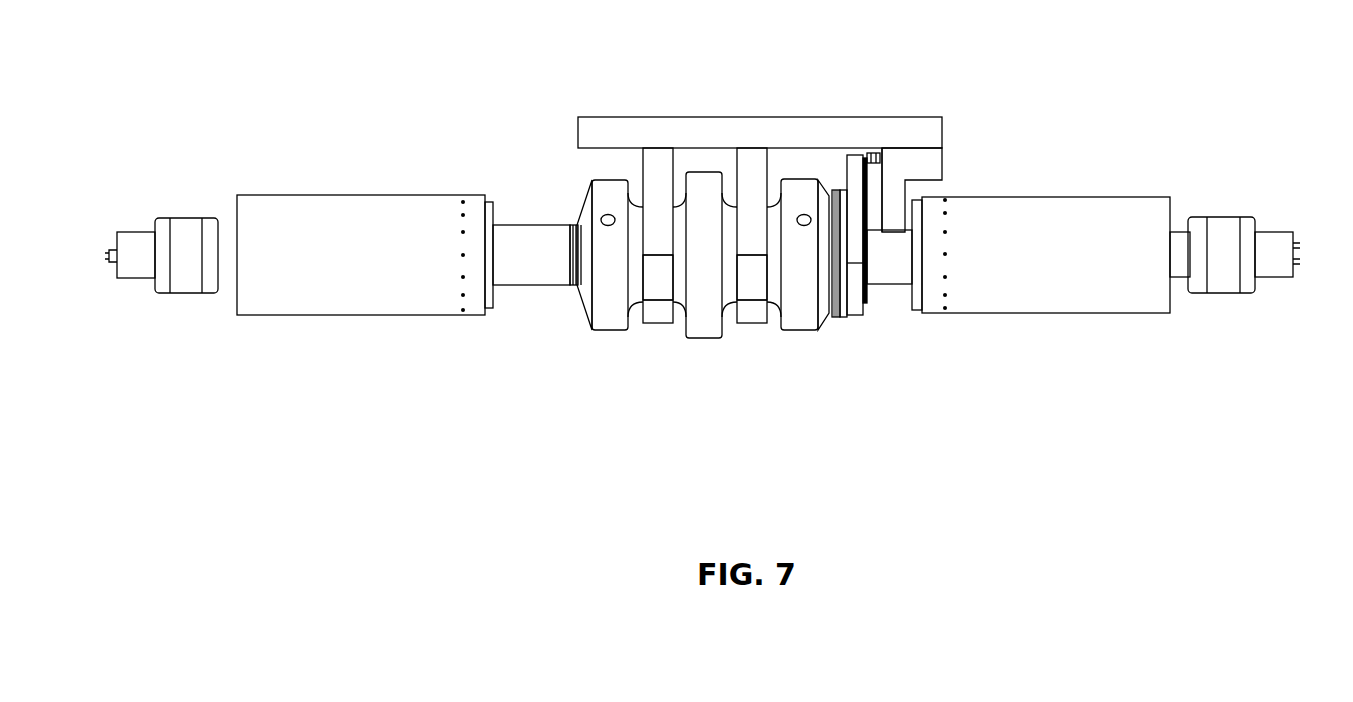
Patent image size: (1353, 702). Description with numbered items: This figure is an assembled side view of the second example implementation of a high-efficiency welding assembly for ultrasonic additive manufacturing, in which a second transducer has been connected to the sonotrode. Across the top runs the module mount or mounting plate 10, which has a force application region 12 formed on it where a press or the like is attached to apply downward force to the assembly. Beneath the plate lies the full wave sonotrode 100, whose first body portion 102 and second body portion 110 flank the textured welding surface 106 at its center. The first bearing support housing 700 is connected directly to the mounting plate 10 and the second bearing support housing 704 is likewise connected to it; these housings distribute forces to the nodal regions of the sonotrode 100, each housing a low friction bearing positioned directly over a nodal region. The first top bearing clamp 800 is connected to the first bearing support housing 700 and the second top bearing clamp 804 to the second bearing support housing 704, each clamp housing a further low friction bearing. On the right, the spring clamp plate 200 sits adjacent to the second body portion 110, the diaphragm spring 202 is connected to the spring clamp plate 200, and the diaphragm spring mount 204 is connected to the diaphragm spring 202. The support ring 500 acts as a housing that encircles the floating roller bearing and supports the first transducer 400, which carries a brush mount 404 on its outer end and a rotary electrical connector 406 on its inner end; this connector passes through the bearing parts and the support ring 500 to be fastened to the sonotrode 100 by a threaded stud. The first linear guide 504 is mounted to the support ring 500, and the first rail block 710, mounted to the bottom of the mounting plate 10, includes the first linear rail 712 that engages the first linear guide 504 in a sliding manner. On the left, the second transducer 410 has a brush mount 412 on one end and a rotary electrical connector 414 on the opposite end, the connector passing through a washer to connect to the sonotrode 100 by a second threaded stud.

The mounting plate 10 is at (605, 108).
The force application region 12 is at (702, 116).
The full wave sonotrode 100 is at (593, 384).
The first body portion 102 is at (595, 332).
The textured welding surface 106 is at (702, 338).
The second body portion 110 is at (807, 331).
The spring clamp plate 200 is at (833, 320).
The diaphragm spring 202 is at (838, 320).
The diaphragm spring mount 204 is at (842, 322).
The first transducer 400 is at (1041, 255).
The brush mount 404 is at (1223, 217).
The rotary electrical connector 406 is at (893, 286).
The second transducer 410 is at (365, 255).
The brush mount 412 is at (187, 222).
The rotary electrical connector 414 is at (530, 225).
The support ring 500 is at (853, 320).
The first linear guide 504 is at (858, 150).
The first bearing support housing 700 is at (656, 158).
The second bearing support housing 704 is at (752, 158).
The first rail block 710 is at (943, 165).
The first linear rail 712 is at (872, 155).
The first top bearing clamp 800 is at (655, 322).
The second top bearing clamp 804 is at (748, 322).